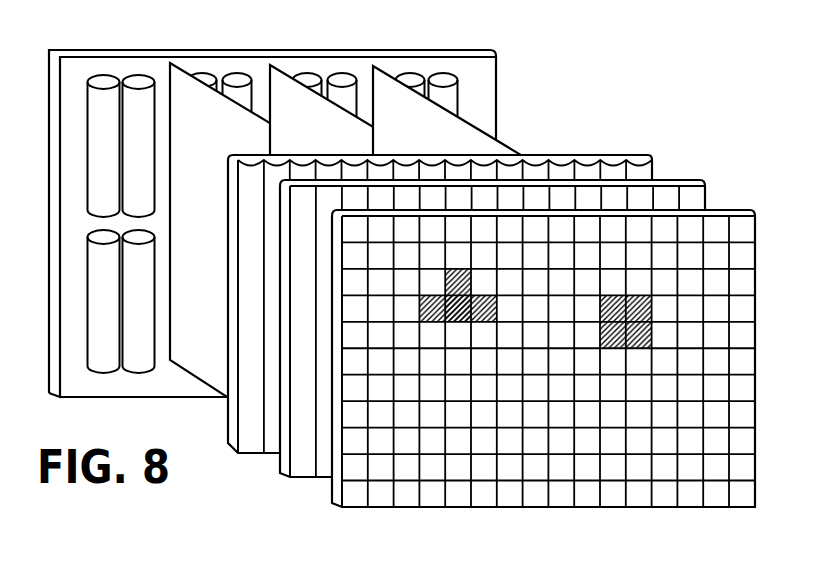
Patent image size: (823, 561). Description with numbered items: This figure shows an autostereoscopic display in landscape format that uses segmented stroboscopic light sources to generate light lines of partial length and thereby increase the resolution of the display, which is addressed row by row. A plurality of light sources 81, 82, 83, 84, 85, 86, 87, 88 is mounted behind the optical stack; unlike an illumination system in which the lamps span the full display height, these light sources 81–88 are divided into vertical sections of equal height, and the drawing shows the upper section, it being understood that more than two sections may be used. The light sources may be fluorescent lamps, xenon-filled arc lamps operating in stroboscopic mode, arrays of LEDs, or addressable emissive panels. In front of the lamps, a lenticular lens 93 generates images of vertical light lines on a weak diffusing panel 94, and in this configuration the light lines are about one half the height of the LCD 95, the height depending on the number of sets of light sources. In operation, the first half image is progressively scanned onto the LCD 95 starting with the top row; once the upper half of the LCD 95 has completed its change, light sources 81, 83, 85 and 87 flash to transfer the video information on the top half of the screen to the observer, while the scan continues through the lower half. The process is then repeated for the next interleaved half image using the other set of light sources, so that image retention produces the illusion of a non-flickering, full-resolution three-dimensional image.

The light source 81 is at (103, 82).
The light source 82 is at (137, 82).
The light source 83 is at (200, 80).
The light source 84 is at (235, 80).
The light source 85 is at (308, 80).
The light source 86 is at (350, 80).
The light source 87 is at (413, 80).
The light source 88 is at (447, 80).
The lenticular lens 93 is at (652, 158).
The weak diffusing panel 94 is at (705, 186).
The LCD 95 is at (332, 500).